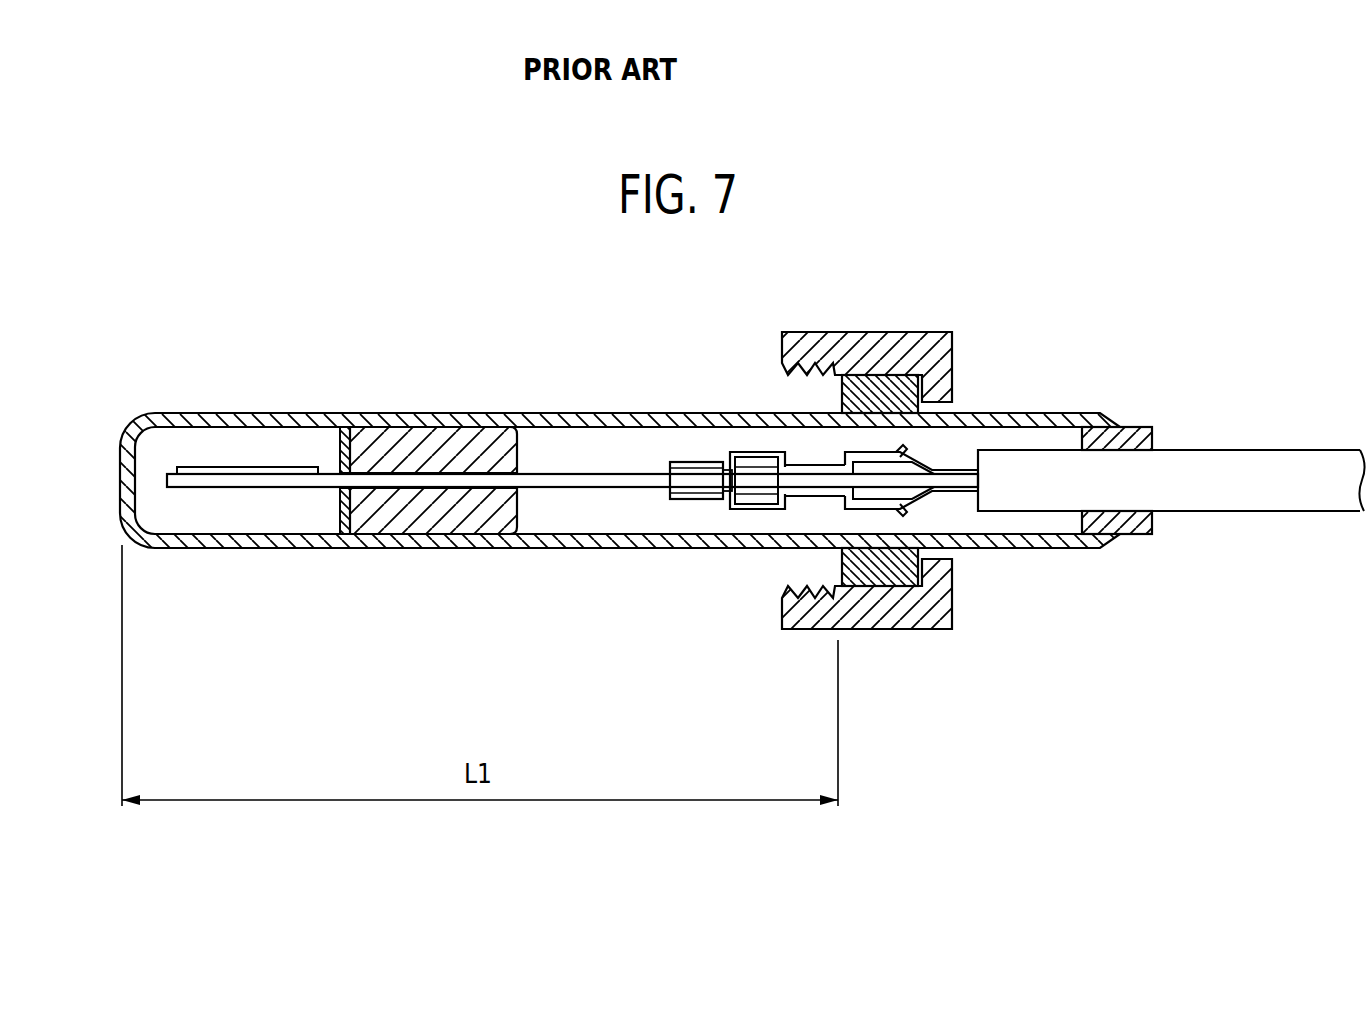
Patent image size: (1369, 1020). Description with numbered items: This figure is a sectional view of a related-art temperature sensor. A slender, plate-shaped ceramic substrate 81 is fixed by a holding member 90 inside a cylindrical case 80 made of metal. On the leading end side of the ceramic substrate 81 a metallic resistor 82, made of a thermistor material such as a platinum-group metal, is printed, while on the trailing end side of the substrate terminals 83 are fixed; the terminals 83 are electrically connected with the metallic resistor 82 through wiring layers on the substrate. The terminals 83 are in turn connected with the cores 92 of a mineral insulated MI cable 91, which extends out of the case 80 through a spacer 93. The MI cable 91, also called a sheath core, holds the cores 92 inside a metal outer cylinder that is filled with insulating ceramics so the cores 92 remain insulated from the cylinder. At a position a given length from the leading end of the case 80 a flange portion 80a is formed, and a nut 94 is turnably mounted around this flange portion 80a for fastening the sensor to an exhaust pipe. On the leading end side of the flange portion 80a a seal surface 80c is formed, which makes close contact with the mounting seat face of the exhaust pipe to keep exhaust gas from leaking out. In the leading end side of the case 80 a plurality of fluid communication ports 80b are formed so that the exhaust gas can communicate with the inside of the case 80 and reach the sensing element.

The cylindrical case 80 is at (610, 412).
The flange portion 80a is at (842, 565).
The fluid communication ports 80b is at (186, 412).
The seal surface 80c is at (842, 388).
The ceramic substrate 81 is at (528, 478).
The metallic resistor 82 is at (212, 466).
The terminals 83 is at (685, 462).
The holding member 90 is at (390, 448).
The MI cable 91 is at (1262, 448).
The cores 92 is at (968, 445).
The spacer 93 is at (1135, 425).
The nut 94 is at (868, 350).